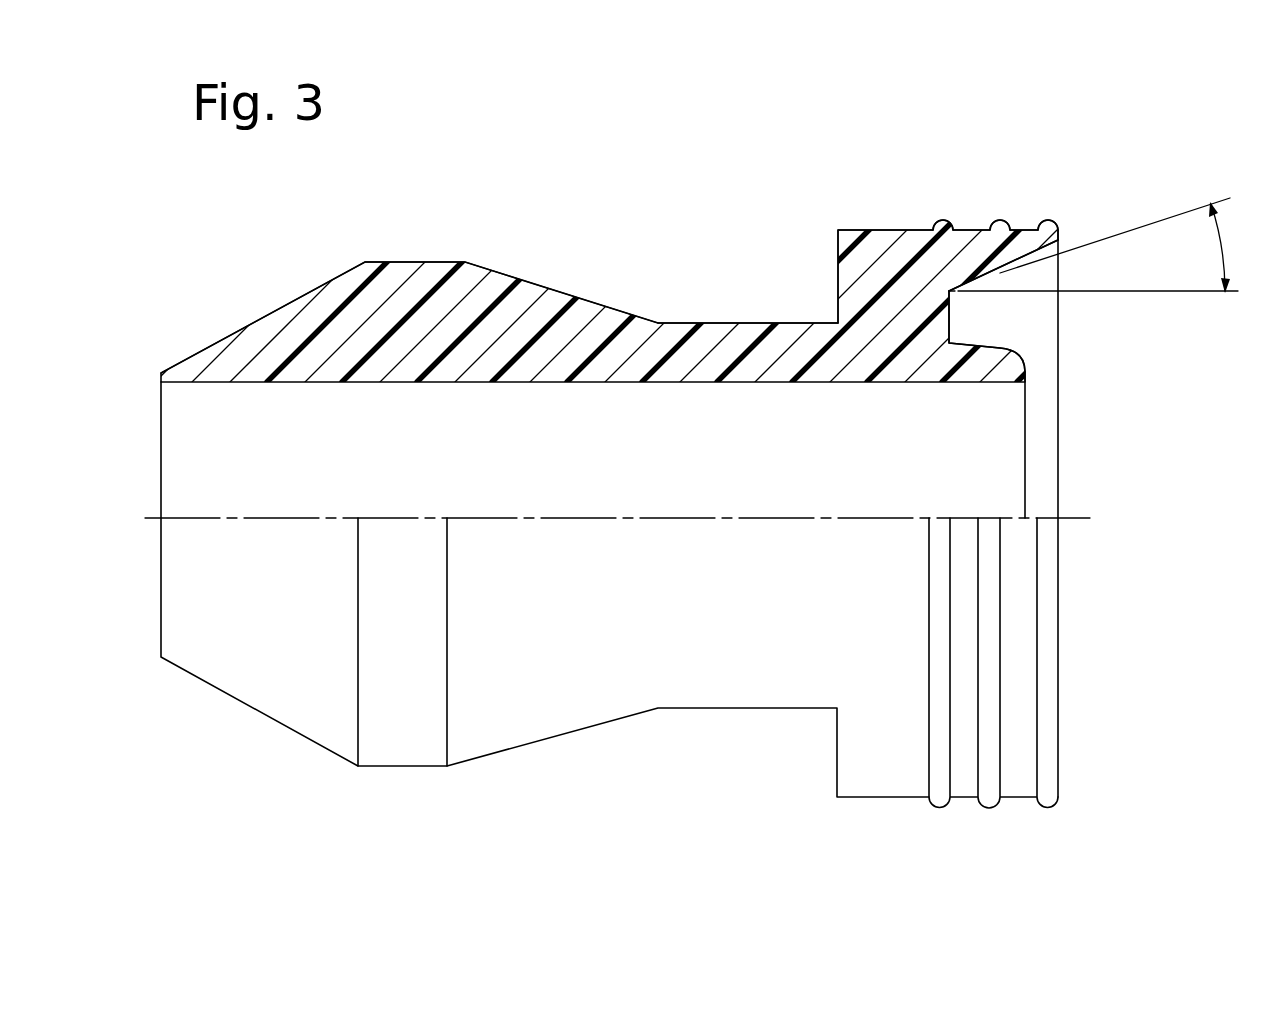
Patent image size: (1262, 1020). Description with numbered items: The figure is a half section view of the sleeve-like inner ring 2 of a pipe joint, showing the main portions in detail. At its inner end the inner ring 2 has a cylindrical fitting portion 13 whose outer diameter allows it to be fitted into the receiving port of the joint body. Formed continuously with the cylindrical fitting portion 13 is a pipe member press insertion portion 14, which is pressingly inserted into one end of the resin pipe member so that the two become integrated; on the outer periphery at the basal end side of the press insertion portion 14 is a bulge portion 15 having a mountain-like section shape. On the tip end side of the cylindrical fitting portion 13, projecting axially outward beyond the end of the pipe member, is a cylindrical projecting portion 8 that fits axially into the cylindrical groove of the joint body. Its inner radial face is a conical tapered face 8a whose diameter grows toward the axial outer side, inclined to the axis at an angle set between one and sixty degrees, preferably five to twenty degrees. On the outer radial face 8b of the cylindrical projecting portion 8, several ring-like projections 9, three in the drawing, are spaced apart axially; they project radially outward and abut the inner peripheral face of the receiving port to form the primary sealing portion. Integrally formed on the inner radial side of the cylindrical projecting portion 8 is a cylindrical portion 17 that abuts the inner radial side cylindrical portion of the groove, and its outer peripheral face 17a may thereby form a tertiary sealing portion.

The inner ring 2 is at (283, 302).
The bulge portion 15 is at (413, 262).
The pipe member press insertion portion 14 is at (745, 323).
The cylindrical fitting portion 13 is at (862, 235).
The ring-like projections 9 is at (985, 226).
The outer radial face 8b is at (1022, 230).
The cylindrical projecting portion 8 is at (1062, 233).
The conical tapered face 8a is at (1034, 269).
The outer peripheral face 17a is at (1004, 348).
The cylindrical portion 17 is at (993, 370).